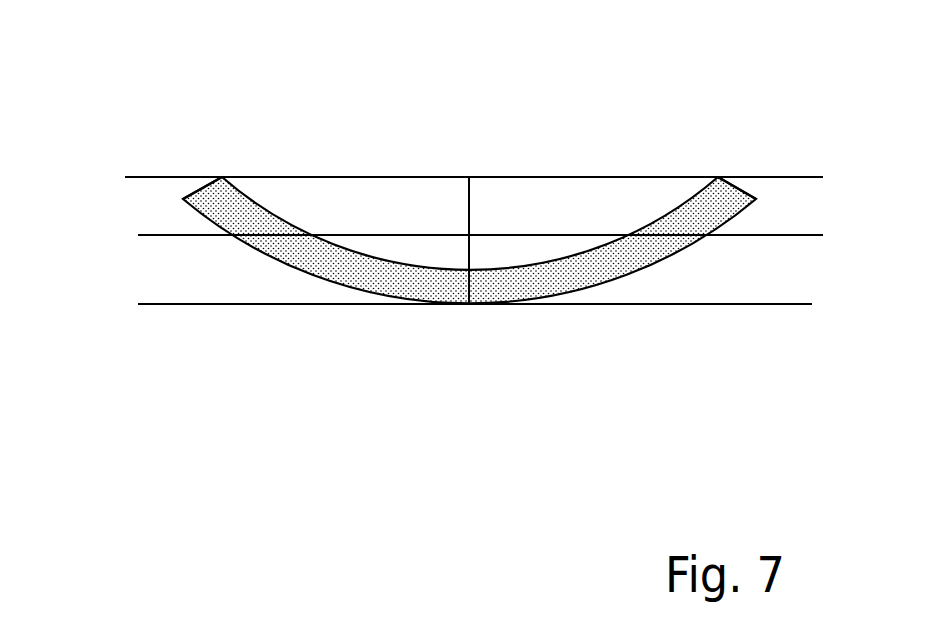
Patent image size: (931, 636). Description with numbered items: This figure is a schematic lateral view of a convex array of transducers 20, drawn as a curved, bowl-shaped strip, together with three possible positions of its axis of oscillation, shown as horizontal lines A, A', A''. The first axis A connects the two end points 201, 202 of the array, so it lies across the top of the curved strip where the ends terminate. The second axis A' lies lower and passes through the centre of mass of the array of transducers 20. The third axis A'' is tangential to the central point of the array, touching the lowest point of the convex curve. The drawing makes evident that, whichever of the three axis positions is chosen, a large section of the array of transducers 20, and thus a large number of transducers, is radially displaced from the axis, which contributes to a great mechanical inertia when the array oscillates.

The convex array of transducers 20 is at (338, 296).
The end point 201 is at (222, 177).
The end point 202 is at (717, 177).
The axis of oscillation A is at (474, 103).
The axis of oscillation A' is at (509, 307).
The axis of oscillation A'' is at (431, 200).